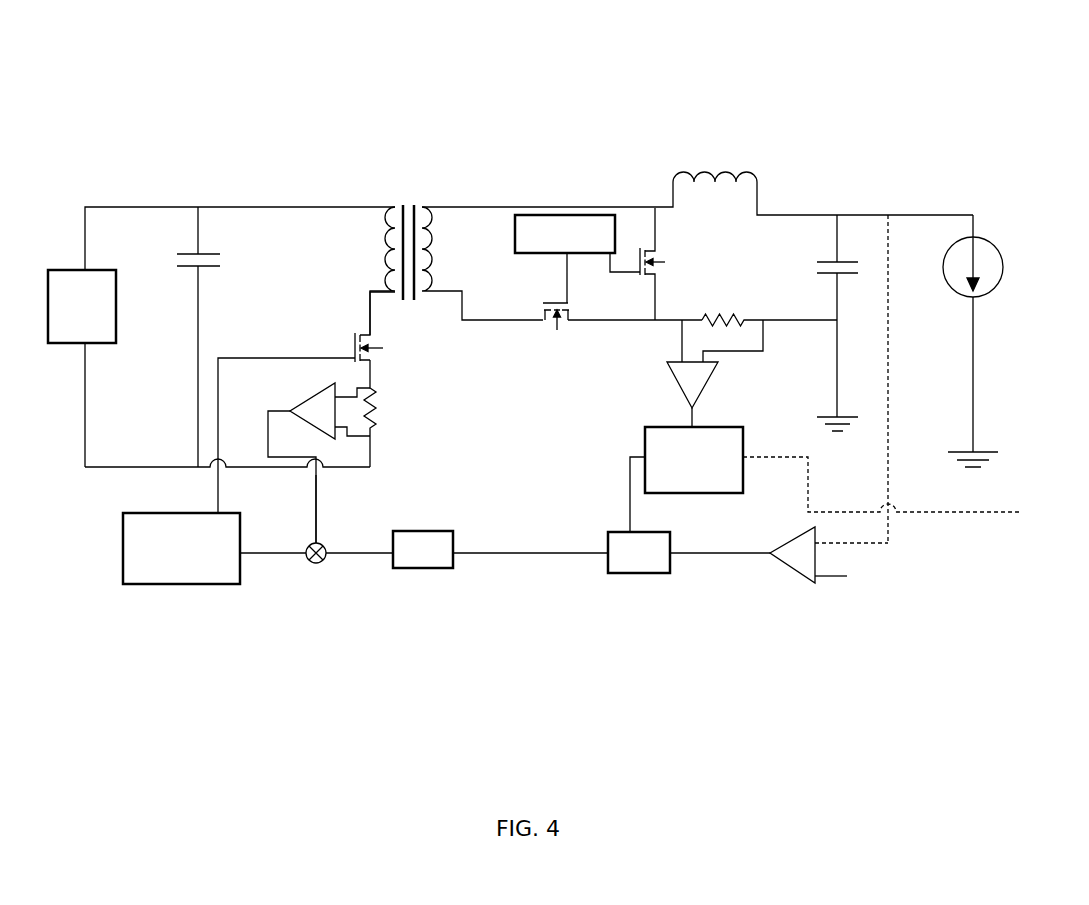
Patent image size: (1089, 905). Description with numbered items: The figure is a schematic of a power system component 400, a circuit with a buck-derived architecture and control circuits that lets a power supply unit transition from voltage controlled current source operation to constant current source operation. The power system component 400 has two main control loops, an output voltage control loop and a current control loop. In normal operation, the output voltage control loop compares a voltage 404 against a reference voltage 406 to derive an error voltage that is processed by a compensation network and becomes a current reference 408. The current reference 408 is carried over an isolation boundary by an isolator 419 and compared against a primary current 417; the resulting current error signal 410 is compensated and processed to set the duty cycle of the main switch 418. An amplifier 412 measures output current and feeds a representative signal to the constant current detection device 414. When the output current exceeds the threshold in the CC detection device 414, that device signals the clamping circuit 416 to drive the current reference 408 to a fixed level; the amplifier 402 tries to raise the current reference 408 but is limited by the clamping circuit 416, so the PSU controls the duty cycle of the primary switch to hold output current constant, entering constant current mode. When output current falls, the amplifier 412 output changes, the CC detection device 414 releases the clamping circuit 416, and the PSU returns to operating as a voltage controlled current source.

The power system component 400 is at (966, 123).
The amplifier 402 is at (800, 558).
The voltage 404 is at (888, 392).
The reference voltage 406 is at (877, 588).
The current reference 408 is at (753, 530).
The current error signal 410 is at (282, 557).
The amplifier 412 is at (690, 377).
The constant current (CC) detection device 414 is at (743, 427).
The clamping circuit 416 is at (632, 573).
The primary current 417 is at (317, 505).
The main switch 418 is at (352, 337).
The isolator 419 is at (430, 568).